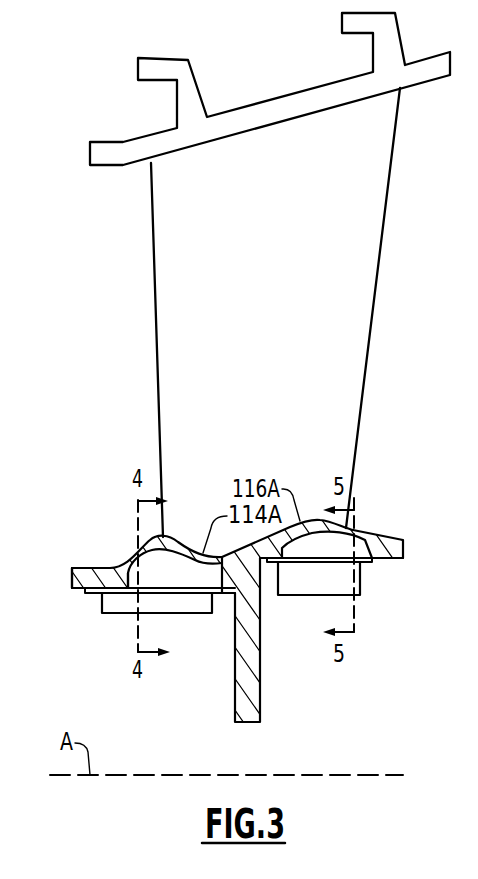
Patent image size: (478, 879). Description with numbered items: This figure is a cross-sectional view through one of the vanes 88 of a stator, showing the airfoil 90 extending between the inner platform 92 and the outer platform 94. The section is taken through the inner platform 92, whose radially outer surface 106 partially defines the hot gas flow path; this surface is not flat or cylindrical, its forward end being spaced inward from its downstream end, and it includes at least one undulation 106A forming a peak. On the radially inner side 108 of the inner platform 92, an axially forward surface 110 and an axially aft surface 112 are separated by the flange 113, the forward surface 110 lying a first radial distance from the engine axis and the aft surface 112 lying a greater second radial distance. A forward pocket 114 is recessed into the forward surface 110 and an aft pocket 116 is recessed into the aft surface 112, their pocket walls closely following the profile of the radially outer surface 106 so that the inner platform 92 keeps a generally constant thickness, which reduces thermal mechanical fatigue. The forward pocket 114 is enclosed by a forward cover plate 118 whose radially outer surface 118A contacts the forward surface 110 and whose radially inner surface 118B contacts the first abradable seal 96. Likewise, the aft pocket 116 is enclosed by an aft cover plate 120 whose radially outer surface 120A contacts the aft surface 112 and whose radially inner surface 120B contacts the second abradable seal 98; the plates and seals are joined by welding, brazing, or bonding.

The vane 88 is at (98, 278).
The airfoil 90 is at (262, 300).
The inner platform 92 is at (237, 628).
The outer platform 94 is at (423, 83).
The first abradable seal 96 is at (117, 614).
The second abradable seal 98 is at (298, 596).
The radially outer surface 106 is at (76, 566).
The undulation 106A is at (310, 520).
The radially inner side 108 is at (243, 650).
The forward surface 110 is at (80, 590).
The aft surface 112 is at (391, 559).
The flange 113 is at (261, 718).
The forward pocket 114 is at (162, 572).
The aft pocket 116 is at (325, 567).
The forward cover plate 118 is at (122, 590).
The radially outer surface 118A is at (97, 582).
The radially inner surface 118B is at (89, 594).
The aft cover plate 120 is at (375, 574).
The radially outer surface 120A is at (369, 552).
The radially inner surface 120B is at (370, 563).